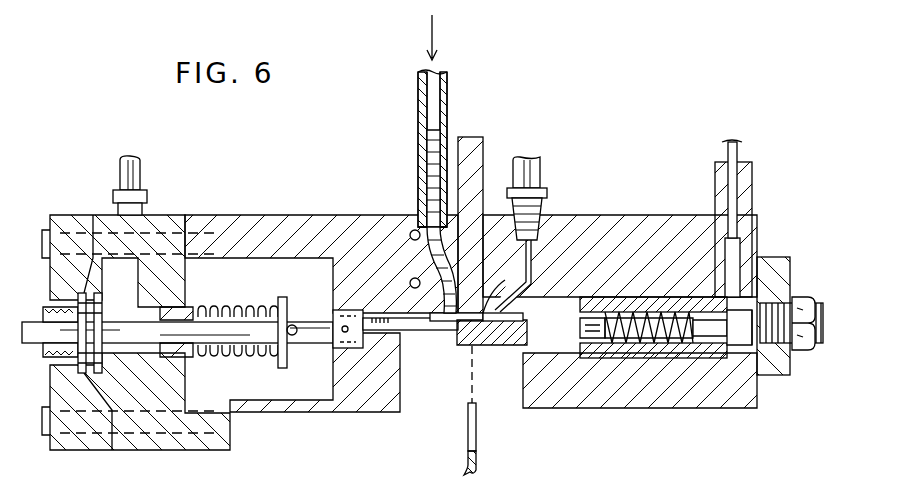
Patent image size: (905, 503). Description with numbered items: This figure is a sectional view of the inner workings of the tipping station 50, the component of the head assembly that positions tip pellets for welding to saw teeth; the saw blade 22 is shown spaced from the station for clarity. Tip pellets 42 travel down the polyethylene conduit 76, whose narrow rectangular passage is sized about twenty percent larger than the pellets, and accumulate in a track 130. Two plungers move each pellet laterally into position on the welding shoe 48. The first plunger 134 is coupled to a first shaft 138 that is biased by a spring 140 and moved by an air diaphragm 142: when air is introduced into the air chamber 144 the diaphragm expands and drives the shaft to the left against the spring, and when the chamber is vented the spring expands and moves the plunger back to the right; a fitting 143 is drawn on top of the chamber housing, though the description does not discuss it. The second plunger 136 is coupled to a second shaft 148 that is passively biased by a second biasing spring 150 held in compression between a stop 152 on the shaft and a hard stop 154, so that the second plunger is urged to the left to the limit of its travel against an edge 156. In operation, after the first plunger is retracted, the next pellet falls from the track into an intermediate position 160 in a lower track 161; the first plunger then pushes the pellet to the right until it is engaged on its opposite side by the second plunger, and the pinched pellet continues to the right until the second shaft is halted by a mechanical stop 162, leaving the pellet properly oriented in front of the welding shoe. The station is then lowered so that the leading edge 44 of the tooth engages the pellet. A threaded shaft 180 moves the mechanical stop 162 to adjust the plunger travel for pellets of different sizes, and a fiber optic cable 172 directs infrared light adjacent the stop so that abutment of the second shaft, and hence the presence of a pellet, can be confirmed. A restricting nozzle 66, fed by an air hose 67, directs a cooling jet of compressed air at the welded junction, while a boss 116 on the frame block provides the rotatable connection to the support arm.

The saw blade 22 is at (478, 456).
The tip pellet 42 is at (430, 174).
The leading edge 44 is at (468, 430).
The welding shoe 48 is at (470, 350).
The tipping station 50 is at (651, 138).
The restricting nozzle 66 is at (535, 255).
The air hose 67 is at (543, 170).
The polyethylene conduit 76 is at (418, 108).
The boss 116 is at (778, 257).
The track 130 is at (423, 256).
The first plunger 134 is at (410, 331).
The second plunger 136 is at (500, 346).
The first shaft 138 is at (240, 345).
The spring 140 is at (241, 306).
The air diaphragm 142 is at (118, 263).
The fitting 143 is at (140, 170).
The air chamber 144 is at (135, 306).
The second shaft 148 is at (596, 350).
The second biasing spring 150 is at (654, 350).
The stop 152 is at (607, 300).
The hard stop 154 is at (704, 300).
The edge 156 is at (462, 342).
The intermediate position 160 is at (425, 316).
The lower track 161 is at (460, 308).
The mechanical stop 162 is at (730, 345).
The fiber optic cable 172 is at (739, 146).
The threaded shaft 180 is at (809, 297).